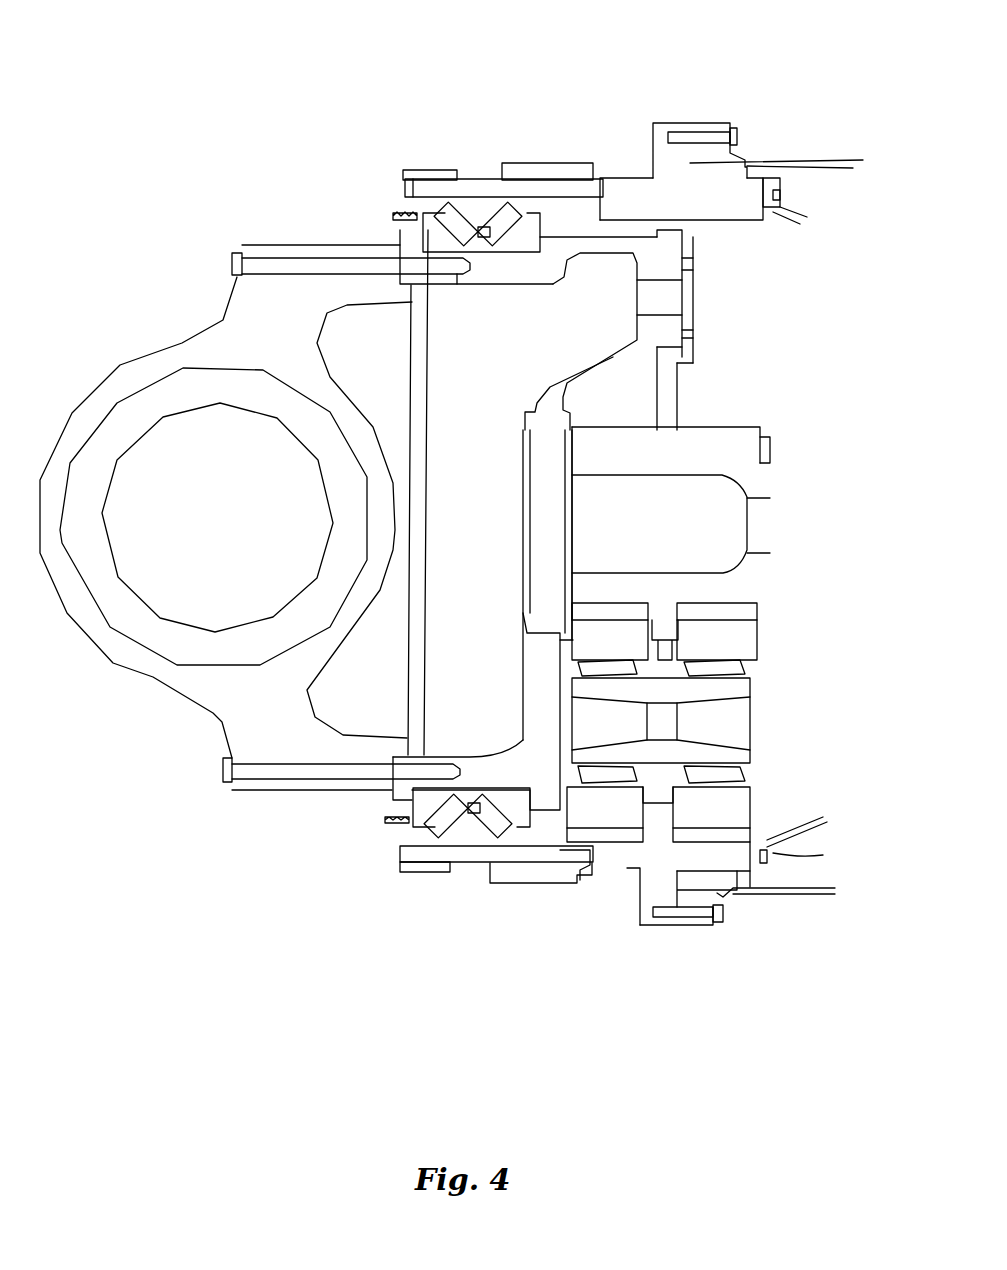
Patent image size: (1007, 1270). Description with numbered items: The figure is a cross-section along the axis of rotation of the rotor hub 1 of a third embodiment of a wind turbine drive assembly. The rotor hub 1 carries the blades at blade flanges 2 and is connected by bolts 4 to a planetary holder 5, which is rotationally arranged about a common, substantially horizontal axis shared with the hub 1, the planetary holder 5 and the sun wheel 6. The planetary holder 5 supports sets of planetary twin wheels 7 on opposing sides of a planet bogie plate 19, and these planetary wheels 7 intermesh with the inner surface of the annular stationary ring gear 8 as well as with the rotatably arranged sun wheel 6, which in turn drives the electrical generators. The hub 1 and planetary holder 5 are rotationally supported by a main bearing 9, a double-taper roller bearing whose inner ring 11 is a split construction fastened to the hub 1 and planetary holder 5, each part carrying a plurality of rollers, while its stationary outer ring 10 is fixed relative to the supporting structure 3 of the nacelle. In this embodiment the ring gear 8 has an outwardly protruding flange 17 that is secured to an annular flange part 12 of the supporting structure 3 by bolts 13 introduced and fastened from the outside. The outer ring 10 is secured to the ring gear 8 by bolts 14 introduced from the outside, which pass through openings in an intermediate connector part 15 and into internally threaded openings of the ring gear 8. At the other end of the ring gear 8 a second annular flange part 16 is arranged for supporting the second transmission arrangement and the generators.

The rotor hub 1 is at (138, 330).
The blade flange 2 is at (147, 633).
The supporting structure 3 is at (825, 160).
The bolt 4 is at (228, 262).
The planetary holder 5 is at (550, 387).
The sun wheel 6 is at (622, 583).
The planetary wheel 7 is at (583, 632).
The ring gear 8 is at (628, 195).
The main bearing 9 is at (483, 143).
The outer ring 10 is at (472, 195).
The inner ring 11 is at (487, 250).
The annular flange part 12 is at (420, 172).
The bolt 13 is at (712, 132).
The bolt 14 is at (387, 177).
The intermediate connector part 15 is at (547, 170).
The second annular flange part 16 is at (813, 210).
The outwardly protruding flange 17 is at (690, 135).
The planet bogie plate 19 is at (672, 402).